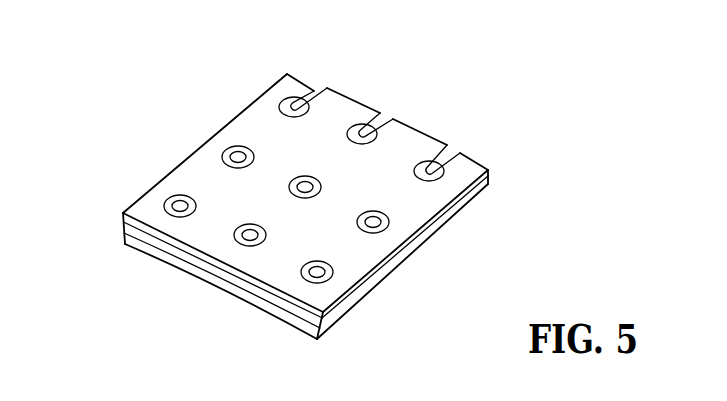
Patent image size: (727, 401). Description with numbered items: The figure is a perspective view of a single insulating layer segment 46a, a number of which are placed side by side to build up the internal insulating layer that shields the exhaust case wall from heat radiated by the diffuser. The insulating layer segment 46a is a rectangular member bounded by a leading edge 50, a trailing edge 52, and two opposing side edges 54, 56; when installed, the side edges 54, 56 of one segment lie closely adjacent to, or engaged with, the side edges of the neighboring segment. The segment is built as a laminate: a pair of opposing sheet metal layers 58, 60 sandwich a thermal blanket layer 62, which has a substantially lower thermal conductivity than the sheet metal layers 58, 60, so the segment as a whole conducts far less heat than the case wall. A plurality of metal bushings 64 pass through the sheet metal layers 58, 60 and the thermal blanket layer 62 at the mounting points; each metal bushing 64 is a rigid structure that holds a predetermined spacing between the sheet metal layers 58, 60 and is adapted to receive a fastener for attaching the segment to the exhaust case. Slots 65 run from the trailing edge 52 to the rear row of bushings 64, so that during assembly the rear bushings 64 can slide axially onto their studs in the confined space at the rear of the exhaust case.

The insulating layer segment 46a is at (265, 85).
The leading edge 50 is at (300, 310).
The trailing edge 52 is at (418, 131).
The side edge 54 is at (370, 293).
The side edge 56 is at (200, 148).
The sheet metal layer 58 is at (147, 208).
The sheet metal layer 60 is at (140, 254).
The thermal blanket layer 62 is at (127, 237).
The metal bushing 64 is at (238, 147).
The slot 65 is at (314, 90).